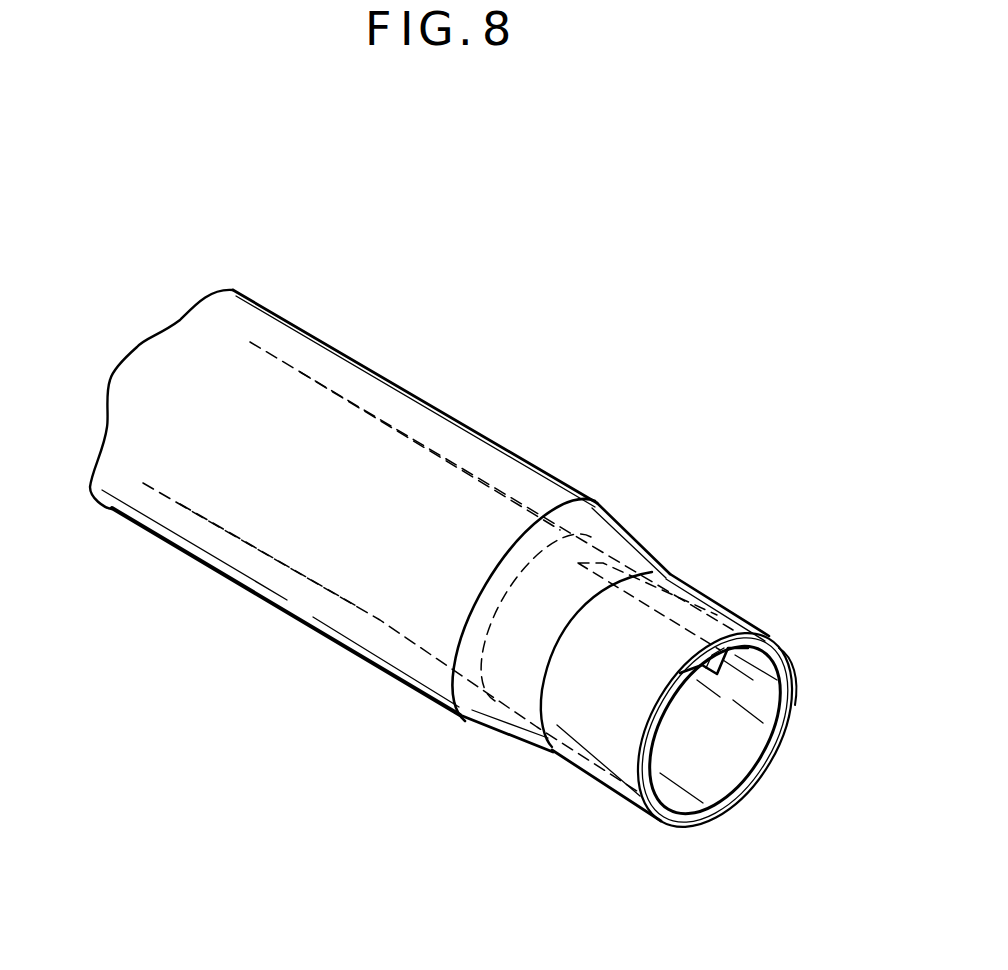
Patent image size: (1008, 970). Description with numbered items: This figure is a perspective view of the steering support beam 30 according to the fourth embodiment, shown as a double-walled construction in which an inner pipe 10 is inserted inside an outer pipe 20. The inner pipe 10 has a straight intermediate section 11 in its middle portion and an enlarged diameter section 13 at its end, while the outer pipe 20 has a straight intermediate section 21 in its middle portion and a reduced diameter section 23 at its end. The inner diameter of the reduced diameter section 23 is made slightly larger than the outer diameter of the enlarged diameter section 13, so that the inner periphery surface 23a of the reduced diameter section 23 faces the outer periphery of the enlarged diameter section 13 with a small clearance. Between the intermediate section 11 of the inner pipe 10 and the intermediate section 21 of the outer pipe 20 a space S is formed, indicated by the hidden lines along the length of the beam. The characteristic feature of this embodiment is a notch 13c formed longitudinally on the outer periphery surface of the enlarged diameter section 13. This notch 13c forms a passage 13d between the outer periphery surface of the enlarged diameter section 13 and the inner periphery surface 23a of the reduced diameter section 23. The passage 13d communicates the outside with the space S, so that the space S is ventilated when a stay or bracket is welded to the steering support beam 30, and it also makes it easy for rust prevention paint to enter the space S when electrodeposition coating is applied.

The steering support beam 30 is at (420, 330).
The space S is at (320, 368).
The intermediate section 11 is at (463, 468).
The intermediate section 21 is at (532, 462).
The outer pipe 20 is at (393, 678).
The inner pipe 10 is at (302, 577).
The enlarged diameter section 13 is at (575, 752).
The notch 13c is at (700, 603).
The passage 13d is at (717, 643).
The reduced diameter section 23 is at (618, 797).
The inner periphery surface 23a is at (790, 651).